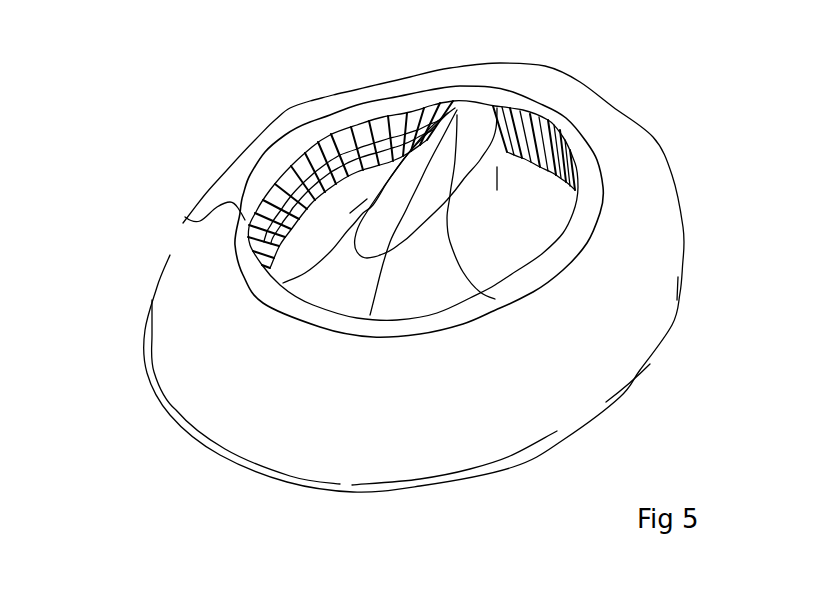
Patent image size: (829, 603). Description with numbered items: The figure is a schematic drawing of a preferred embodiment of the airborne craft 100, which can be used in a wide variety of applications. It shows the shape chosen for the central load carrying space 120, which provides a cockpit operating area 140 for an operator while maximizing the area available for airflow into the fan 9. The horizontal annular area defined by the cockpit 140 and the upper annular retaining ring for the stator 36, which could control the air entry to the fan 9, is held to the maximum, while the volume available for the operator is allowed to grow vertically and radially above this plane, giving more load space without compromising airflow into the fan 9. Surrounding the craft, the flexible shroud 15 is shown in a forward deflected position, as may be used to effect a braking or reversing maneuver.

The airborne craft 100 is at (659, 137).
The flexible shroud 15 is at (262, 377).
The fan 9 is at (328, 152).
The upper annular retaining ring for the stator 36 is at (185, 217).
The central load carrying space 120 is at (385, 127).
The cockpit operating area 140 is at (477, 143).